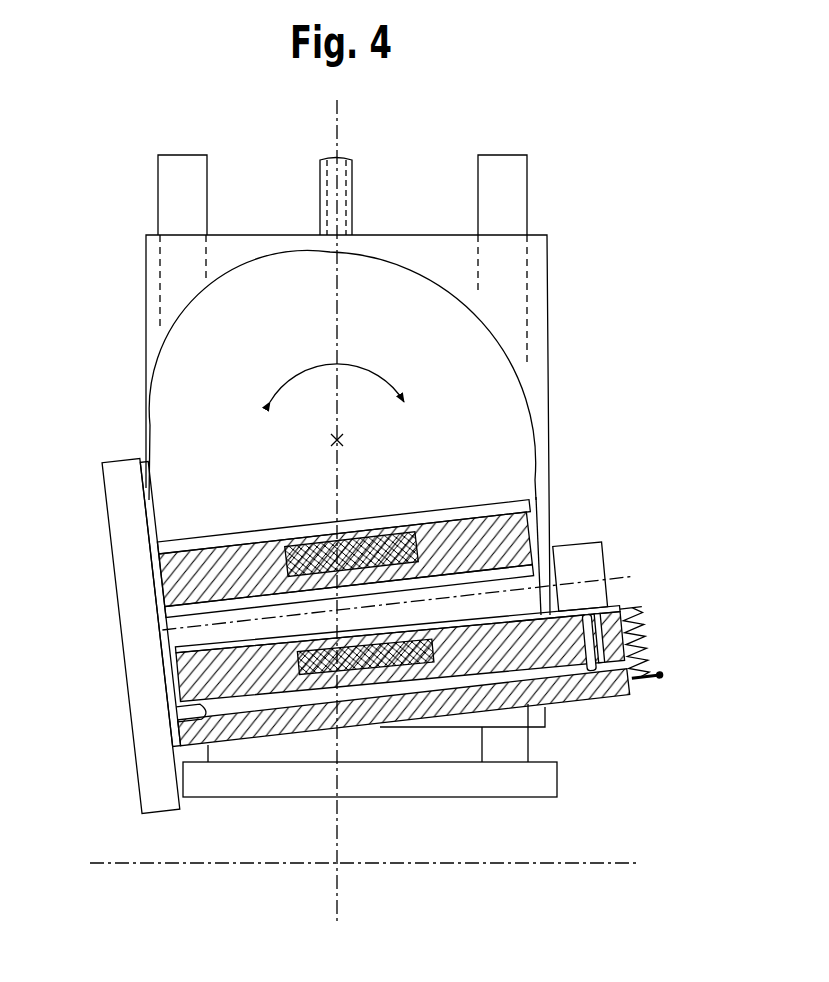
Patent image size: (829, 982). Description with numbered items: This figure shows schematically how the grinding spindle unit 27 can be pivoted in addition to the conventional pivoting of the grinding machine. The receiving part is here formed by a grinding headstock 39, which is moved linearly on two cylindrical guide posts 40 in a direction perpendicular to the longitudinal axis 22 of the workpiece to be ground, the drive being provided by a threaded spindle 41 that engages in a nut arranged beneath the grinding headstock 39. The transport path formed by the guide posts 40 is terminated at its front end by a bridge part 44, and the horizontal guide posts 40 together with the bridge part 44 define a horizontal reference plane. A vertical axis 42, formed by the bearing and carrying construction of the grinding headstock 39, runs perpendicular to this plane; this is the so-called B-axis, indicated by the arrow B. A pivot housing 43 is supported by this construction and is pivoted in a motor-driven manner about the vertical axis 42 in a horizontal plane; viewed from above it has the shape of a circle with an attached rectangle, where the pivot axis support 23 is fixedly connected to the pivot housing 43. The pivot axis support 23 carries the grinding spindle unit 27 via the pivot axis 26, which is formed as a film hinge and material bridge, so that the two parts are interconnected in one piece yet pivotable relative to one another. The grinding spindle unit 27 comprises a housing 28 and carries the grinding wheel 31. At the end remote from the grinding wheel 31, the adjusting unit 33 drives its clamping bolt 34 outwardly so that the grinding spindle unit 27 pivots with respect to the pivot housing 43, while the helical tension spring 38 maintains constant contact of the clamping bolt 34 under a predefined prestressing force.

The longitudinal axis 22 is at (245, 867).
The pivot axis support 23 is at (592, 687).
The pivot axis 26 is at (205, 716).
The grinding spindle unit 27 is at (448, 514).
The housing 28 is at (519, 528).
The grinding wheel 31 is at (118, 507).
The adjusting unit 33 is at (590, 562).
The clamping bolt 34 is at (638, 614).
The helical tension spring 38 is at (652, 655).
The grinding headstock 39 is at (222, 263).
The guide posts 40 is at (166, 183).
The threaded spindle 41 is at (343, 180).
The vertical axis 42 is at (333, 442).
The pivot housing 43 is at (485, 390).
The bridge part 44 is at (400, 778).
The B-axis B is at (347, 364).